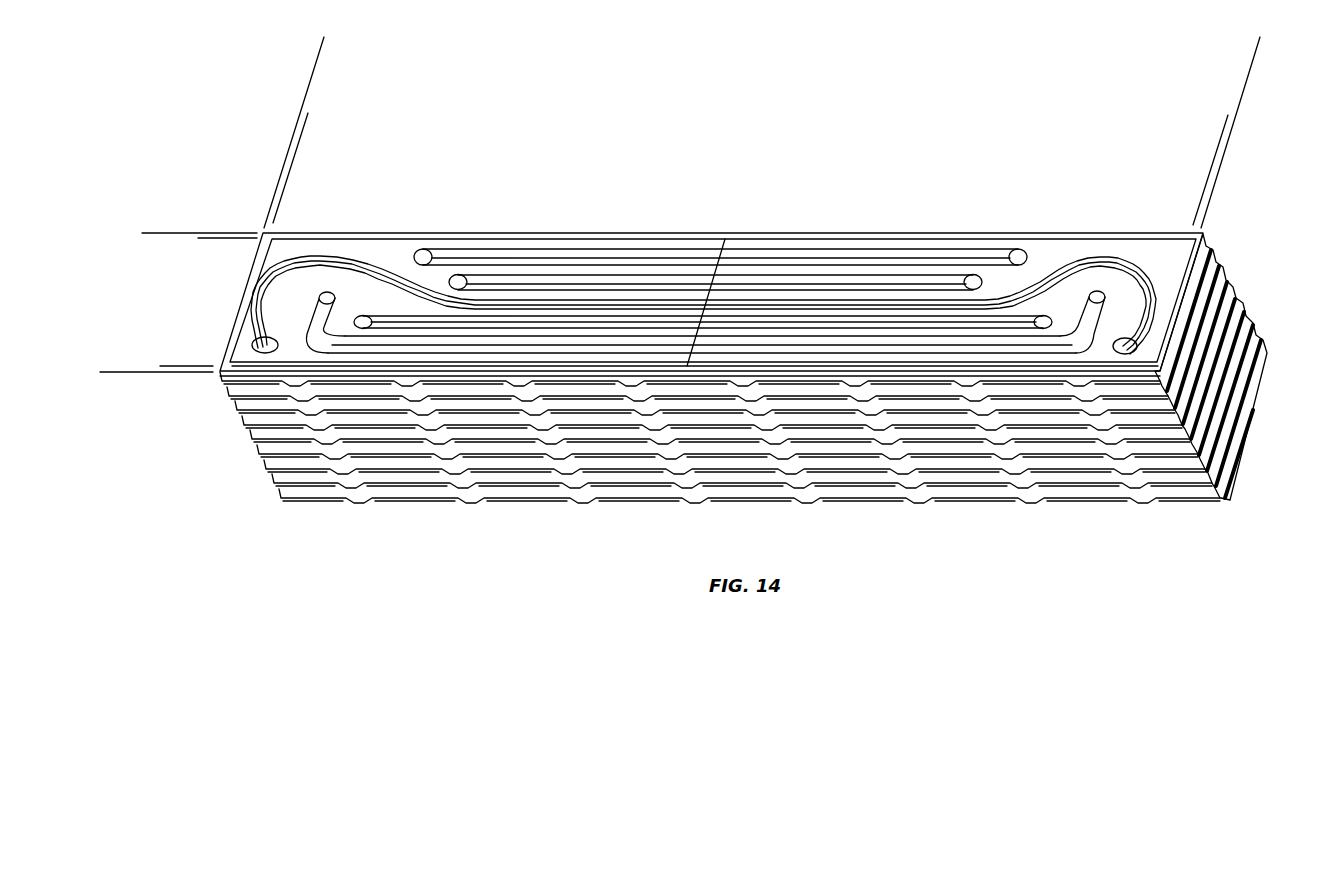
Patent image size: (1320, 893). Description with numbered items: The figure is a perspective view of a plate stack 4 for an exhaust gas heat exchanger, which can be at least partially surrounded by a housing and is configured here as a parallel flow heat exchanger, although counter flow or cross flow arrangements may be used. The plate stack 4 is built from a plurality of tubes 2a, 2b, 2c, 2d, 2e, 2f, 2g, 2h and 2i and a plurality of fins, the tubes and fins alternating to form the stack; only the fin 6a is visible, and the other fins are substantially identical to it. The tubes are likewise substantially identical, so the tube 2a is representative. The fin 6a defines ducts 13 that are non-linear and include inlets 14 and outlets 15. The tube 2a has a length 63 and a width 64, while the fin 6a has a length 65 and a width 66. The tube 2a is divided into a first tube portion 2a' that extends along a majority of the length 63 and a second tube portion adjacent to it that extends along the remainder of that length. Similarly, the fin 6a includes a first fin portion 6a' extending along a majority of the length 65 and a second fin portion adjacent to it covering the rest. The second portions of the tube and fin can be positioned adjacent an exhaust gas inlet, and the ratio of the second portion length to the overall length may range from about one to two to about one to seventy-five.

The plate stack 4 is at (1246, 210).
The tube 2a is at (664, 387).
The tube 2b is at (228, 393).
The tube 2c is at (236, 407).
The tube 2d is at (243, 421).
The tube 2e is at (251, 436).
The tube 2f is at (258, 451).
The tube 2g is at (266, 465).
The tube 2h is at (273, 480).
The tube 2i is at (281, 494).
The fin 6a is at (743, 303).
The ducts 13 is at (1047, 282).
The inlets 14 is at (1130, 348).
The outlets 15 is at (423, 250).
The length 63 is at (323, 48).
The width 64 is at (162, 233).
The length 65 is at (303, 126).
The width 66 is at (220, 237).
The first tube portion 2a' is at (672, 91).
The first fin portion 6a' is at (643, 197).